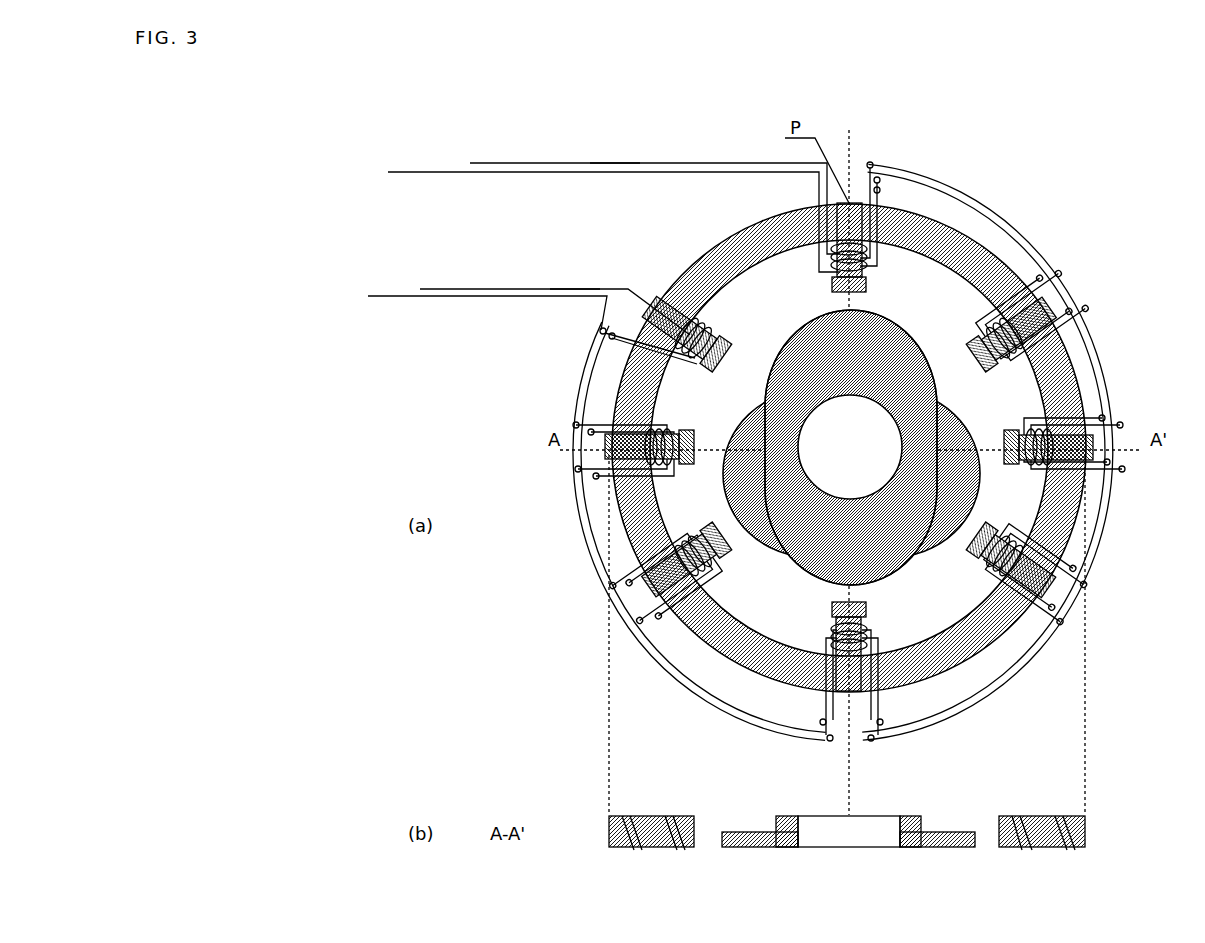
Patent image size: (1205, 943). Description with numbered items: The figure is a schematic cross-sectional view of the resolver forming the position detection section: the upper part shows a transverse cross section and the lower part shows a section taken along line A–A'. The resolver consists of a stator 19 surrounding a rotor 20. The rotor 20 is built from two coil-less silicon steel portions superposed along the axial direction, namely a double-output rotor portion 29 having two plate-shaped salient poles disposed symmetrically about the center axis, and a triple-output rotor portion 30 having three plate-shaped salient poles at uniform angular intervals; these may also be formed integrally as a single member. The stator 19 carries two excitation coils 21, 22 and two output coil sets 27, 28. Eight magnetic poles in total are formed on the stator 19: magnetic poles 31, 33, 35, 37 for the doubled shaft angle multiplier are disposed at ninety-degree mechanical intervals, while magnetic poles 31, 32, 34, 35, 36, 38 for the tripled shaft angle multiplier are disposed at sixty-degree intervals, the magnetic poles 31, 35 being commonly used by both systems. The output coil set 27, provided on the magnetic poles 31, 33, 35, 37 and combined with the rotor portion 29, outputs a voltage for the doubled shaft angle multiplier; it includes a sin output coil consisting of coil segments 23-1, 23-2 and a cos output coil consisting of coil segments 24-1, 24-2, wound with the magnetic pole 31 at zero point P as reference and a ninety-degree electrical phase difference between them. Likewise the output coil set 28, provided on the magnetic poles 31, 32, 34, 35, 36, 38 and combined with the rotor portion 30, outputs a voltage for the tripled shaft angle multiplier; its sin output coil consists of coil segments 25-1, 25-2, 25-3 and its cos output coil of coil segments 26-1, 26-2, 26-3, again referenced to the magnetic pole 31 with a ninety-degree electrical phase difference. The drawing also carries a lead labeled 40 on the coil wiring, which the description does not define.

The stator 19 is at (733, 200).
The rotor 20 is at (818, 540).
The excitation coil 21 is at (1050, 320).
The excitation coil 22 is at (1122, 472).
The coil segment 23-1 is at (873, 168).
The coil segment 23-2 is at (884, 724).
The coil segment 24-1 is at (1053, 470).
The coil segment 24-2 is at (570, 472).
The coil segment 25-1 is at (880, 180).
The coil segment 25-2 is at (1070, 604).
The coil segment 25-3 is at (598, 567).
The coil segment 26-1 is at (1065, 327).
The coil segment 26-2 is at (874, 737).
The coil segment 26-3 is at (605, 336).
The output coil set 27 is at (604, 251).
The output coil set 28 is at (630, 239).
The 2× output rotor portion 29 is at (773, 340).
The 3× output rotor portion 30 is at (950, 426).
The magnetic pole 31 is at (866, 262).
The magnetic pole 32 is at (1017, 372).
The magnetic pole 33 is at (1042, 462).
The magnetic pole 34 is at (1037, 597).
The magnetic pole 35 is at (883, 622).
The magnetic pole 36 is at (660, 540).
The magnetic pole 37 is at (650, 470).
The magnetic pole 38 is at (683, 323).
The lead wire 40 is at (595, 215).